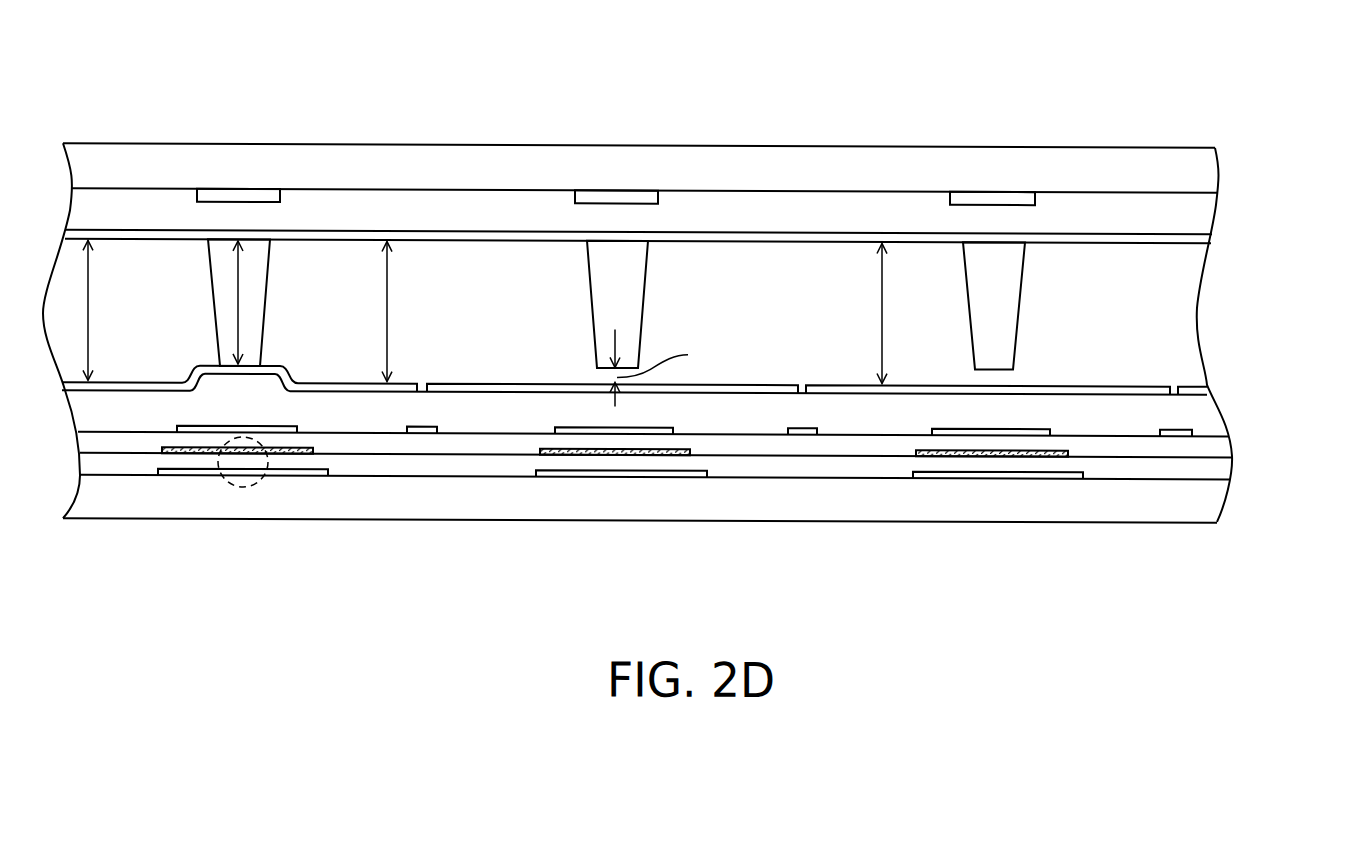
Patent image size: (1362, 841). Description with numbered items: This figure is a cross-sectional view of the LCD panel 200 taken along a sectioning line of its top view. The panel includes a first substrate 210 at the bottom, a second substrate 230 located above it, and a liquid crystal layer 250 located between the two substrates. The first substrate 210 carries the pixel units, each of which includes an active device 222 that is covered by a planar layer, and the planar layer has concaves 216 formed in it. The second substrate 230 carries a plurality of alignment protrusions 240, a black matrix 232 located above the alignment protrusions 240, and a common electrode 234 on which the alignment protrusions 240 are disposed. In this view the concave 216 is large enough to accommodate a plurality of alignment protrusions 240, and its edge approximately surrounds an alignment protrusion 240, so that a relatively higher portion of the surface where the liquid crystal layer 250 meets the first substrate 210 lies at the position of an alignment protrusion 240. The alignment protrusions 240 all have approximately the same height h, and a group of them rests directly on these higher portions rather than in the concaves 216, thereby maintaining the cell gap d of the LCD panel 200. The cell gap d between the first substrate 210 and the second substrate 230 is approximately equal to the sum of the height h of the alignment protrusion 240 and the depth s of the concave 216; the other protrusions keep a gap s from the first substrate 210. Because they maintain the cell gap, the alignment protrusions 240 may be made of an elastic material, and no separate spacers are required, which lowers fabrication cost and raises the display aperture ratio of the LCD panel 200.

The LCD panel 200 is at (1238, 597).
The first substrate 210 is at (1030, 528).
The concave 216 is at (737, 364).
The active device 222 is at (250, 488).
The second substrate 230 is at (1212, 128).
The black matrix 232 is at (260, 195).
The common electrode 234 is at (1207, 235).
The alignment protrusion 240 is at (263, 256).
The liquid crystal layer 250 is at (1183, 322).